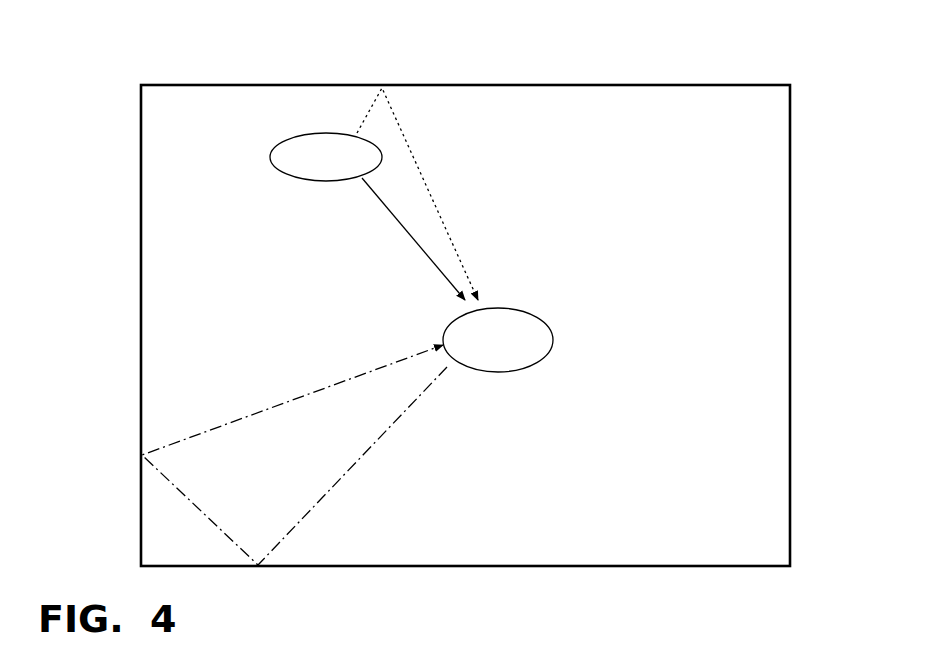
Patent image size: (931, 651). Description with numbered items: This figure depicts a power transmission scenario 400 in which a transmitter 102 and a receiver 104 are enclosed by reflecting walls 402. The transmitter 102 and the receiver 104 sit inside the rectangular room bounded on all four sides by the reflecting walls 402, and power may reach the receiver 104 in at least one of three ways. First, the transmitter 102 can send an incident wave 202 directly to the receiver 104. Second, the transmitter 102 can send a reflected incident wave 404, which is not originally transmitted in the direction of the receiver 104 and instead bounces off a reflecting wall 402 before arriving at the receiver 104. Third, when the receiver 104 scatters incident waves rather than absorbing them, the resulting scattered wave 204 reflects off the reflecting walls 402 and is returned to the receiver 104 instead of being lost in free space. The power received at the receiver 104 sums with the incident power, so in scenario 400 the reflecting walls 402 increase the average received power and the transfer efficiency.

The power transmission scenario 400 is at (845, 68).
The reflecting wall 402 is at (725, 86).
The transmitter 102 is at (293, 134).
The receiver 104 is at (553, 341).
The incident wave 202 is at (392, 218).
The reflected incident wave 404 is at (425, 178).
The scattered wave 204 is at (313, 508).